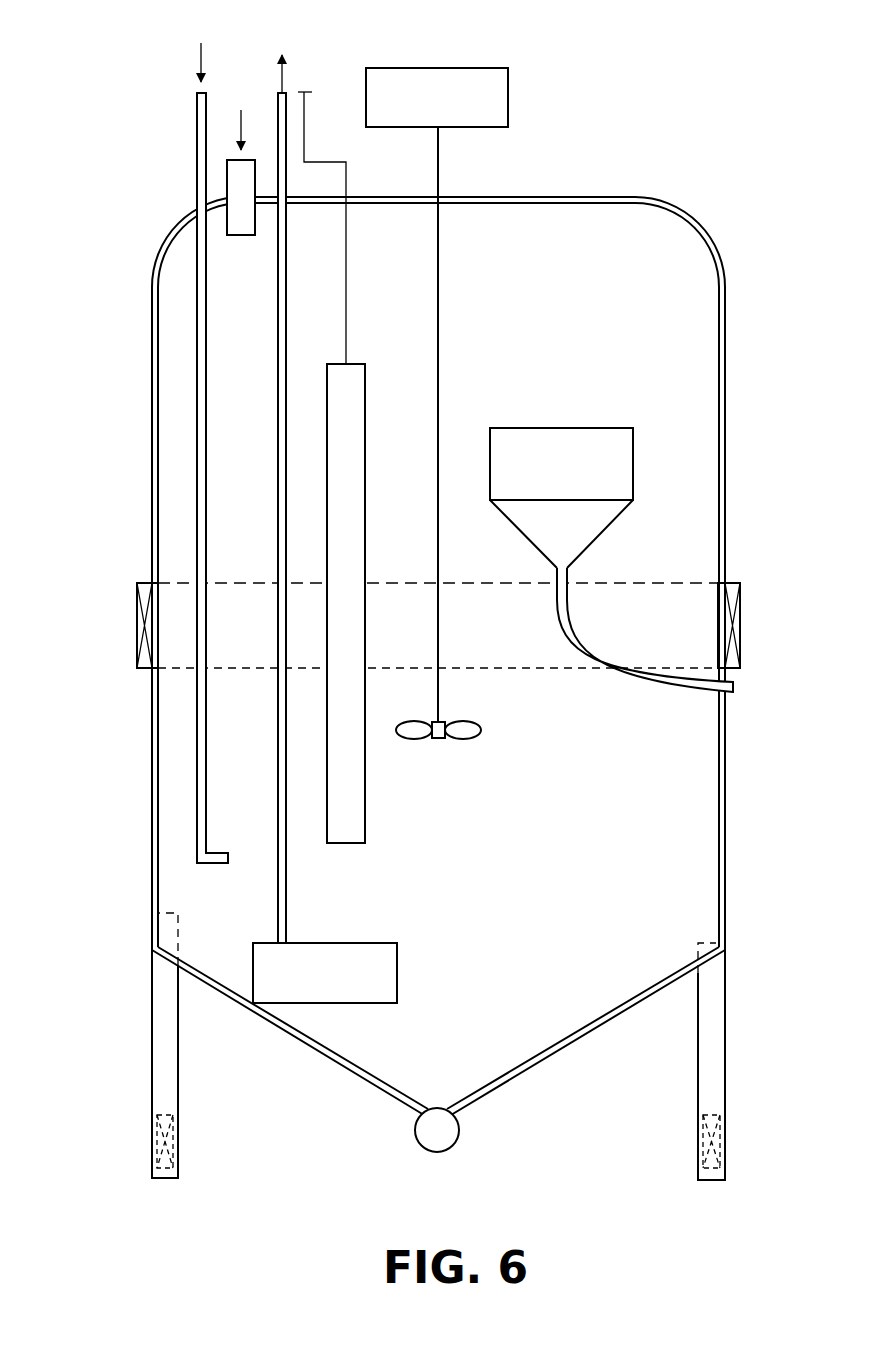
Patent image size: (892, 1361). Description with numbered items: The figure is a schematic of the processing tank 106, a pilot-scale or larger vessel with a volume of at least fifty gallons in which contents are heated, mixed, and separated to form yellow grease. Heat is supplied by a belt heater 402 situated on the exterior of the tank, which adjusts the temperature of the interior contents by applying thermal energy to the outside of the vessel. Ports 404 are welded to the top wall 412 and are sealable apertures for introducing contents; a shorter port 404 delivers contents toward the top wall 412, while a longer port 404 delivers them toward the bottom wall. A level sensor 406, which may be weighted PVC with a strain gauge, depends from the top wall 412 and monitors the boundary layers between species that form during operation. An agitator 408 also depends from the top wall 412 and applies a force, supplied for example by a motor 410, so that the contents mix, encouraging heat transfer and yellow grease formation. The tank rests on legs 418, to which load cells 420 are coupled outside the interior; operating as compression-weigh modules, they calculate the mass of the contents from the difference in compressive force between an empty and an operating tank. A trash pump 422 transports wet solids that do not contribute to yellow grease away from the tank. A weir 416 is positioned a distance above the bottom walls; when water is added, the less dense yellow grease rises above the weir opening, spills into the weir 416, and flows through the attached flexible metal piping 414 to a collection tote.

The processing tank 106 is at (115, 127).
The belt heater 402 is at (742, 625).
The port 404 is at (241, 236).
The level sensor 406 is at (365, 421).
The agitator 408 is at (460, 739).
The motor 410 is at (392, 68).
The top wall 412 is at (571, 196).
The flexible metal piping 414 is at (679, 691).
The weir 416 is at (610, 428).
The leg 418 is at (153, 1025).
The load cell 420 is at (155, 1152).
The trash pump 422 is at (372, 943).